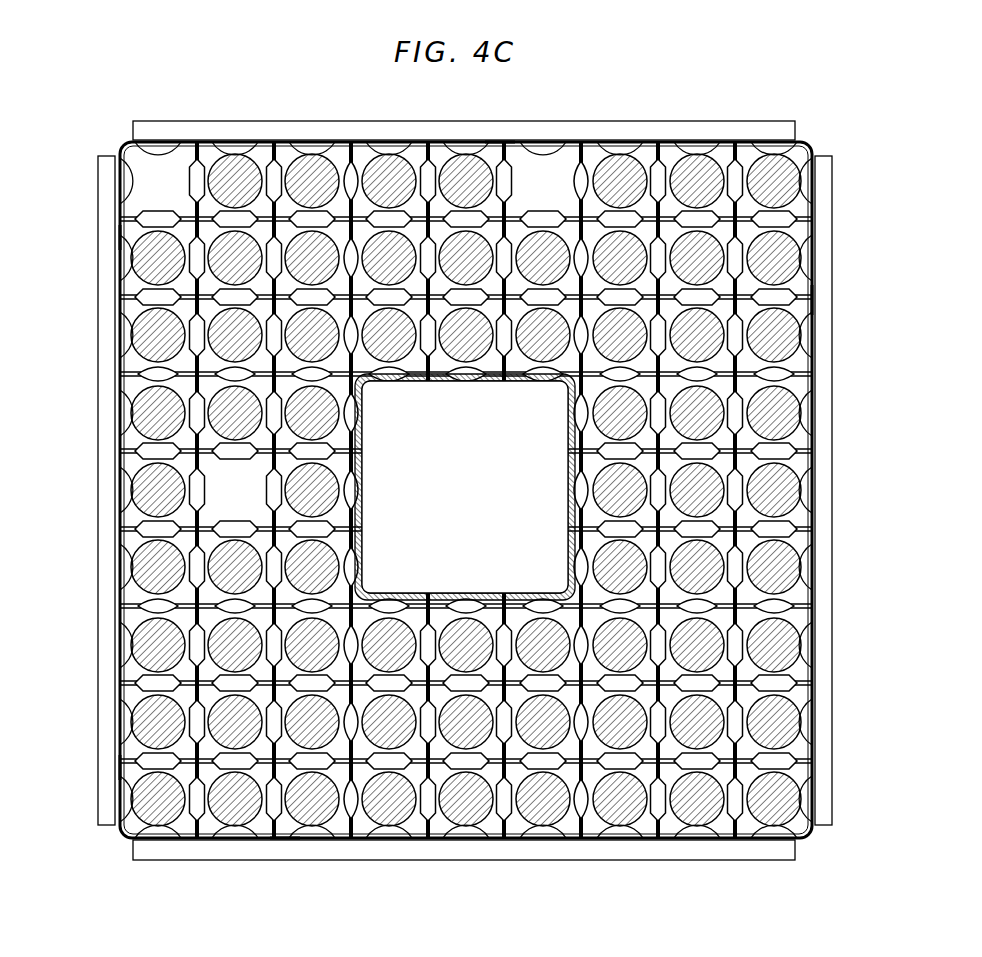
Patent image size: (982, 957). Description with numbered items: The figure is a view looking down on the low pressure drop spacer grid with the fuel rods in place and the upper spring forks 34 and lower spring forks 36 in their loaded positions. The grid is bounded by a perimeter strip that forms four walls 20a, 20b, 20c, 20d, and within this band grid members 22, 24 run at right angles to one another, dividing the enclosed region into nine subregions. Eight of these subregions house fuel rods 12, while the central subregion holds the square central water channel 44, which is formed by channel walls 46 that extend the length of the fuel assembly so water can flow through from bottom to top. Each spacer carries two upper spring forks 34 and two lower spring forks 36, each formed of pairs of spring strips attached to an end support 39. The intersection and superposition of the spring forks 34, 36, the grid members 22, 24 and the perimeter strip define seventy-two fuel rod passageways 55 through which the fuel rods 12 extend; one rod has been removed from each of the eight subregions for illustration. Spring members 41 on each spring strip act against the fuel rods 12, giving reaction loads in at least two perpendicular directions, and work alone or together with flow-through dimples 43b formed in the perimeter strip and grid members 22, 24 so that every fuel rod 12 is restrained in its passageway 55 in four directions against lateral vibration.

The fuel rod 12 is at (466, 451).
The wall 20a is at (118, 768).
The wall 20b is at (283, 840).
The wall 20c is at (810, 298).
The wall 20d is at (503, 147).
The grid member 22 is at (200, 600).
The grid member 24 is at (600, 840).
The upper spring fork 34 is at (830, 538).
The lower spring fork 36 is at (528, 866).
The end support 39 is at (210, 858).
The spring member 41 is at (722, 810).
The dimple 43b is at (650, 843).
The central water channel 44 is at (475, 489).
The channel wall 46 is at (513, 590).
The fuel rod passageway 55 is at (710, 810).